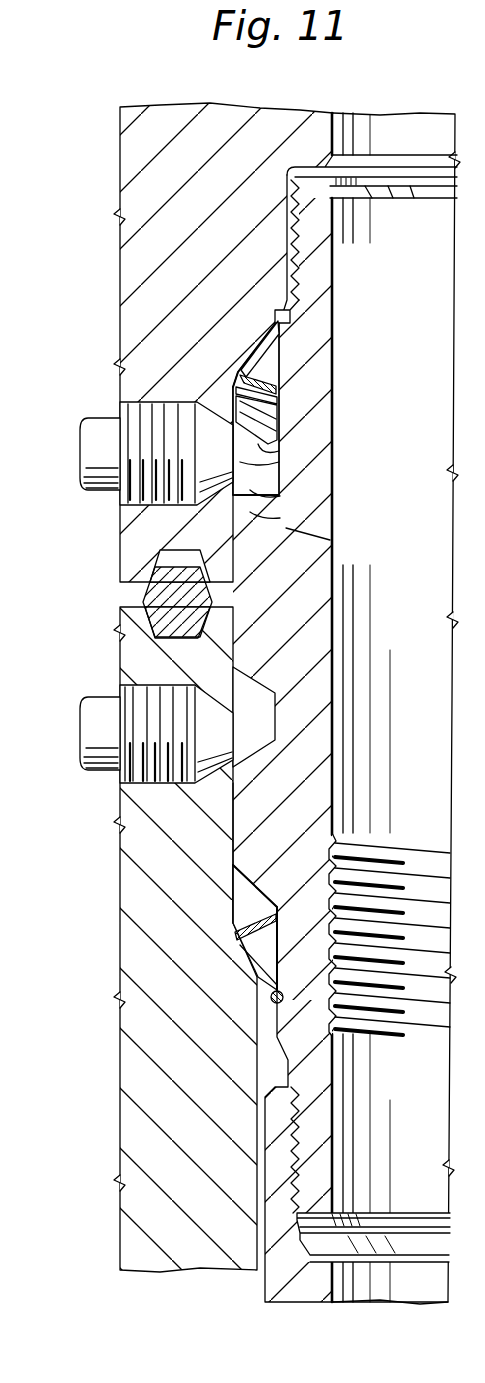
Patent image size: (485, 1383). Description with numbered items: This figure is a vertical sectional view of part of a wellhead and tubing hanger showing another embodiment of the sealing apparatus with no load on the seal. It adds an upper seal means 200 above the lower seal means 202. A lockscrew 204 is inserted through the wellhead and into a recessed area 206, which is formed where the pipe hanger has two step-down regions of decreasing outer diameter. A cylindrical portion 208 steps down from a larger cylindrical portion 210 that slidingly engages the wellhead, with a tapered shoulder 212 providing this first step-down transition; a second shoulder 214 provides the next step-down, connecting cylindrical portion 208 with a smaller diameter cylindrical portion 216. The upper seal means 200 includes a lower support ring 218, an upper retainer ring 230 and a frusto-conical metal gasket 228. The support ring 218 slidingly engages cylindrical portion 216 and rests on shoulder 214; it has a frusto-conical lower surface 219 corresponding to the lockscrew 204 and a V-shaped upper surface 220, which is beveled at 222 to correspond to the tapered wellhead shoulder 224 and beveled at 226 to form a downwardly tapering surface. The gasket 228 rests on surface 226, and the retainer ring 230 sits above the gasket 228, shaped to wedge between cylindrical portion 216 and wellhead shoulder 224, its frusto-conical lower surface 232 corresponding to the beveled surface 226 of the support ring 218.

The upper seal means 200 is at (284, 350).
The lower seal means 202 is at (232, 947).
The lockscrew 204 is at (220, 507).
The recessed area 206 is at (260, 513).
The cylindrical portion 208 is at (260, 492).
The cylindrical portion 210 is at (236, 845).
The tapered shoulder 212 is at (290, 528).
The shoulder 214 is at (258, 452).
The cylindrical portion 216 is at (262, 443).
The support ring 218 is at (270, 420).
The frusto-conical lower surface 219 is at (275, 484).
The V-shaped upper surface 220 is at (236, 375).
The bevel 222 is at (236, 382).
The tapered wellhead shoulder 224 is at (298, 298).
The beveled surface 226 is at (272, 399).
The frusto-conical metal gasket 228 is at (272, 383).
The retainer ring 230 is at (291, 318).
The frusto-conical lower surface 232 is at (276, 366).